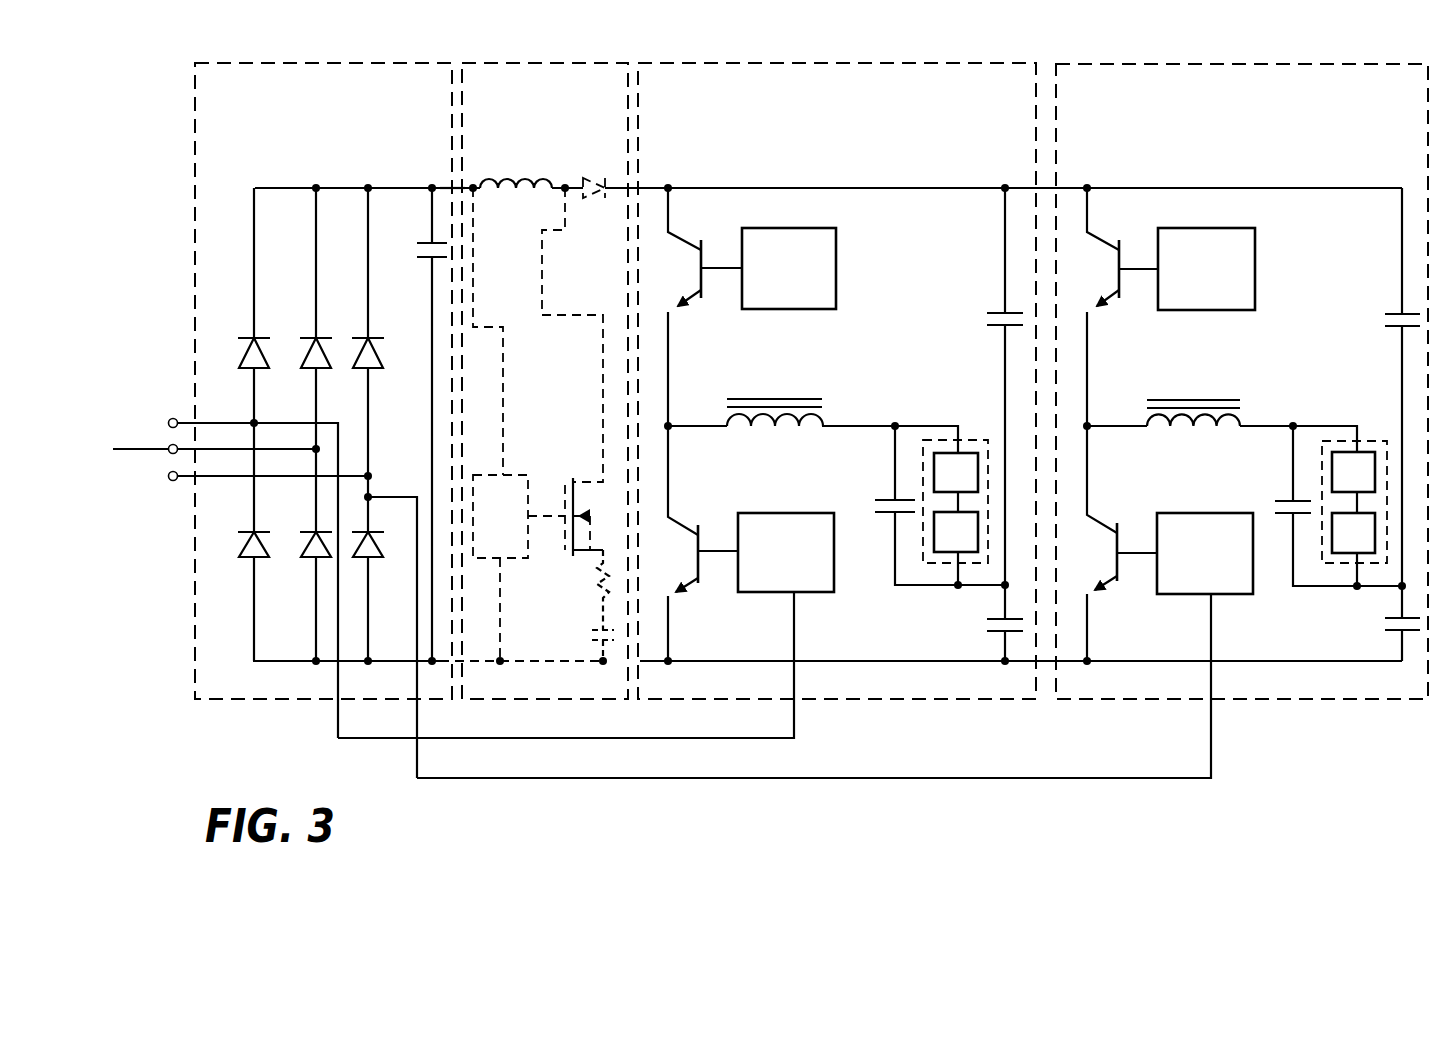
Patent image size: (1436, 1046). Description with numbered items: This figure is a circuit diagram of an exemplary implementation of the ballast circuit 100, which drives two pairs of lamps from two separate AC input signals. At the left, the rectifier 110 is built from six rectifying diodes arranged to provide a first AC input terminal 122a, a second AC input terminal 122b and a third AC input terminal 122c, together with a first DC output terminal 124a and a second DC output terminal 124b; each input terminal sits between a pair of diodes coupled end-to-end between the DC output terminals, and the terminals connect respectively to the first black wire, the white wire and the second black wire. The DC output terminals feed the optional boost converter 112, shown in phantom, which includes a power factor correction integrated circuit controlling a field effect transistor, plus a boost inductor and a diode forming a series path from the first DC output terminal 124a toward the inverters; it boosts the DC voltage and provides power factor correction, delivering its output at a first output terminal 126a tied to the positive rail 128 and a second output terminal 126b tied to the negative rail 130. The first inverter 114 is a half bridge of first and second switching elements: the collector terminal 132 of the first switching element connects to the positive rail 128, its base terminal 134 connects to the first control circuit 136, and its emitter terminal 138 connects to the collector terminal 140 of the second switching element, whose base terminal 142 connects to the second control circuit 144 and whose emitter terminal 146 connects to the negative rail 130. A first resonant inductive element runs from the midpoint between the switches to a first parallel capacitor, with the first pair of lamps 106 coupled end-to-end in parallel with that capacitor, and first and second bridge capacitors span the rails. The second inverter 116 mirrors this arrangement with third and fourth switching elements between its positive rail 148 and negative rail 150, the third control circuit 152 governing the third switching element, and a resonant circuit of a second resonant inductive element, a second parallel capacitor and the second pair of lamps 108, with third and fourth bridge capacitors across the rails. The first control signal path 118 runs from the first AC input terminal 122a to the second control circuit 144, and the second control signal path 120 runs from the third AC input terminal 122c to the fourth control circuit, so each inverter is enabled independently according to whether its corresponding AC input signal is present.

The ballast circuit 100 is at (824, 48).
The first pair of lamps 106 is at (978, 440).
The second pair of lamps 108 is at (1378, 441).
The rectifier 110 is at (260, 137).
The boost converter 112 is at (466, 163).
The first inverter 114 is at (1010, 135).
The second inverter 116 is at (1395, 137).
The first control signal path 118 is at (795, 722).
The second control signal path 120 is at (845, 778).
The first AC input terminal 122a is at (172, 417).
The second AC input terminal 122b is at (113, 449).
The third AC input terminal 122c is at (173, 481).
The first DC output terminal 124a is at (300, 188).
The second DC output terminal 124b is at (304, 662).
The first output terminal 126a is at (614, 196).
The second output terminal 126b is at (577, 664).
The positive rail 128 is at (713, 188).
The negative rail 130 is at (858, 664).
The collector terminal 132 is at (686, 240).
The base terminal 134 is at (722, 270).
The first control circuit 136 is at (877, 265).
The emitter terminal 138 is at (690, 302).
The collector terminal 140 is at (682, 520).
The base terminal 142 is at (720, 552).
The second control circuit 144 is at (820, 592).
The emitter terminal 146 is at (690, 582).
The positive rail 148 is at (1155, 188).
The negative rail 150 is at (1188, 663).
The third control circuit 152 is at (1296, 265).